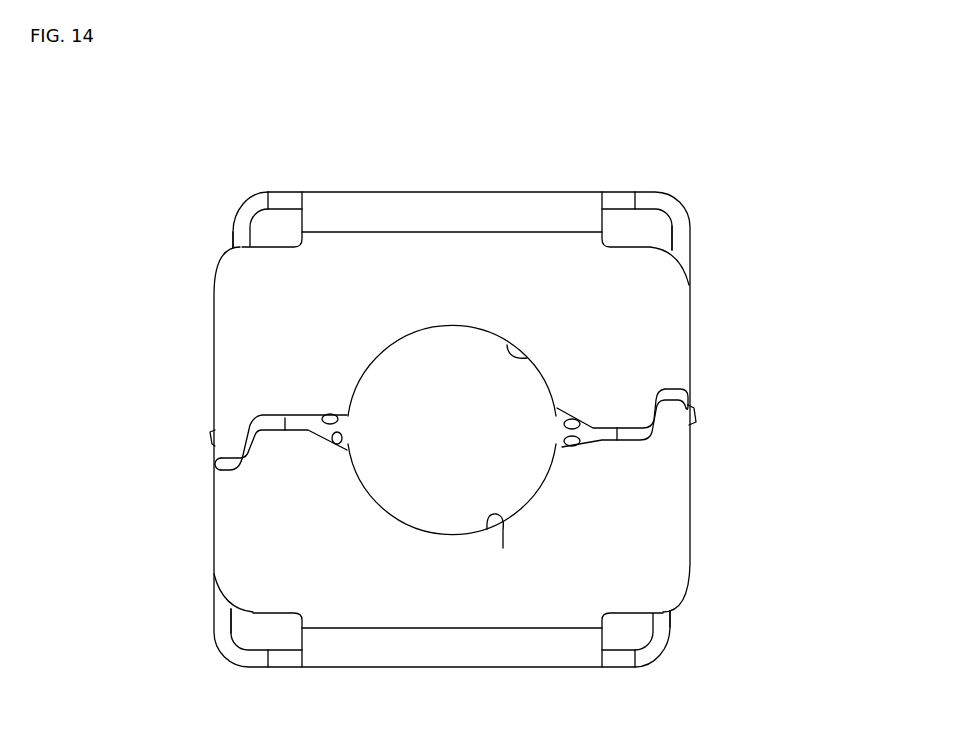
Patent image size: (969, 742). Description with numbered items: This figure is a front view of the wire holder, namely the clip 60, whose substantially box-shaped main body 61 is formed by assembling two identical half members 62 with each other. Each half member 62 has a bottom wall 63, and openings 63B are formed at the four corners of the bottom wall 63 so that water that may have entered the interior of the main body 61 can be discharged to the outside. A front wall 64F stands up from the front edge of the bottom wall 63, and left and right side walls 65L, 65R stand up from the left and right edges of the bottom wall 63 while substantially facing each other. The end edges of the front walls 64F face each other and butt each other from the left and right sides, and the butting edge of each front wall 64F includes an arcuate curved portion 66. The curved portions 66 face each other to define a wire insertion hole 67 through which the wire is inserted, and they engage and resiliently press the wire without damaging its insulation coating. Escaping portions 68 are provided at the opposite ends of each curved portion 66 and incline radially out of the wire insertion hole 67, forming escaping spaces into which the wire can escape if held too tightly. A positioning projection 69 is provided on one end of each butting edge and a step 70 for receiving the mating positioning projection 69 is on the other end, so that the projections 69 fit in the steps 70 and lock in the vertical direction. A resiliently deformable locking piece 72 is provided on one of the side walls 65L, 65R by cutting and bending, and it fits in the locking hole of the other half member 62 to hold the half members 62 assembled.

The clip 60 is at (527, 429).
The main body 61 is at (452, 429).
The half member 62 is at (692, 237).
The bottom wall 63 is at (618, 202).
The opening 63B is at (274, 248).
The front wall 64F is at (648, 332).
The left side wall 65L is at (238, 244).
The right side wall 65R is at (660, 620).
The curved portion 66 is at (527, 358).
The wire insertion hole 67 is at (501, 467).
The escaping portion 68 is at (338, 420).
The positioning projection 69 is at (213, 456).
The step 70 is at (222, 463).
The locking piece 72 is at (213, 436).